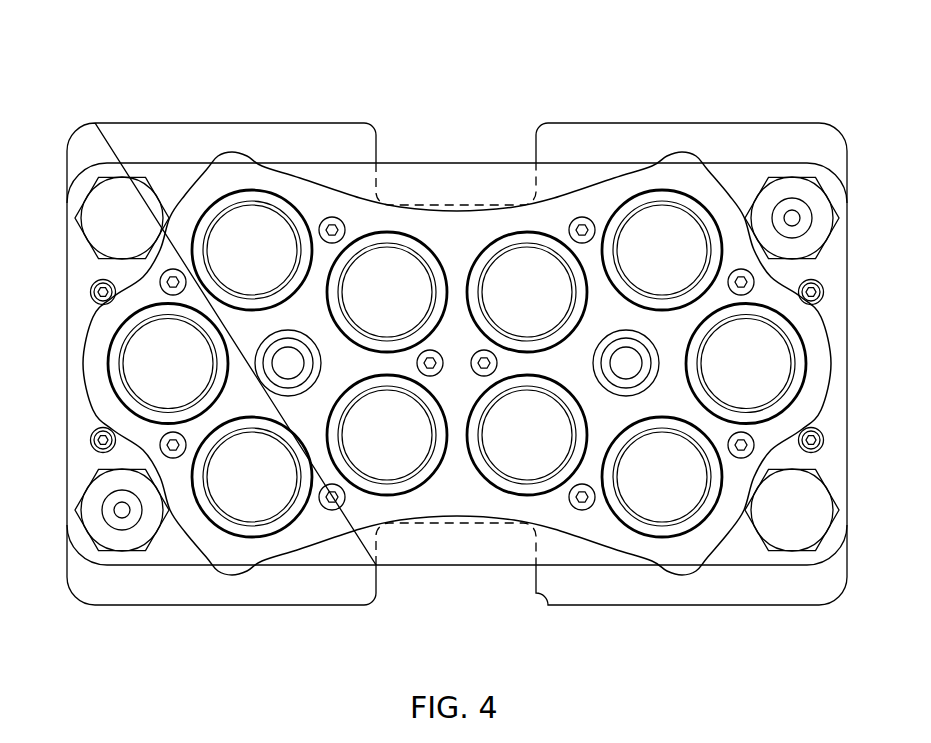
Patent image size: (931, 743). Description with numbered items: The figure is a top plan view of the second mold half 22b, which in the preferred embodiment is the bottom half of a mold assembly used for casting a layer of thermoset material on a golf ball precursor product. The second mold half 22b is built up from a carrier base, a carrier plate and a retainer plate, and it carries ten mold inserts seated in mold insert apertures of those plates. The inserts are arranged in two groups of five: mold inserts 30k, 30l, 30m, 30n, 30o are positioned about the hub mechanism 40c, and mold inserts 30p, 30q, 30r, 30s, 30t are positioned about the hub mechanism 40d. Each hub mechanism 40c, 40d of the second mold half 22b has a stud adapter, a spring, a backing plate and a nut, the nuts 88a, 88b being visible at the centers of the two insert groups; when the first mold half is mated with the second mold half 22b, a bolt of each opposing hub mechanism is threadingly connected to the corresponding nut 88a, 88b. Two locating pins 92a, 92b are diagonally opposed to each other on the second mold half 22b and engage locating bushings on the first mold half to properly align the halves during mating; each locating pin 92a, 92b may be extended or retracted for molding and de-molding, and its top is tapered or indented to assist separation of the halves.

The second mold half 22b is at (213, 58).
The mold insert 30k is at (270, 217).
The mold insert 30l is at (400, 260).
The mold insert 30m is at (402, 467).
The mold insert 30n is at (275, 505).
The mold insert 30o is at (135, 365).
The mold insert 30p is at (510, 260).
The mold insert 30q is at (693, 227).
The mold insert 30r is at (778, 368).
The mold insert 30s is at (690, 500).
The mold insert 30t is at (517, 467).
The hub mechanism 40c is at (250, 458).
The hub mechanism 40d is at (643, 265).
The nut 88a is at (284, 358).
The nut 88b is at (627, 370).
The locating pin 92a is at (122, 512).
The locating pin 92b is at (792, 217).